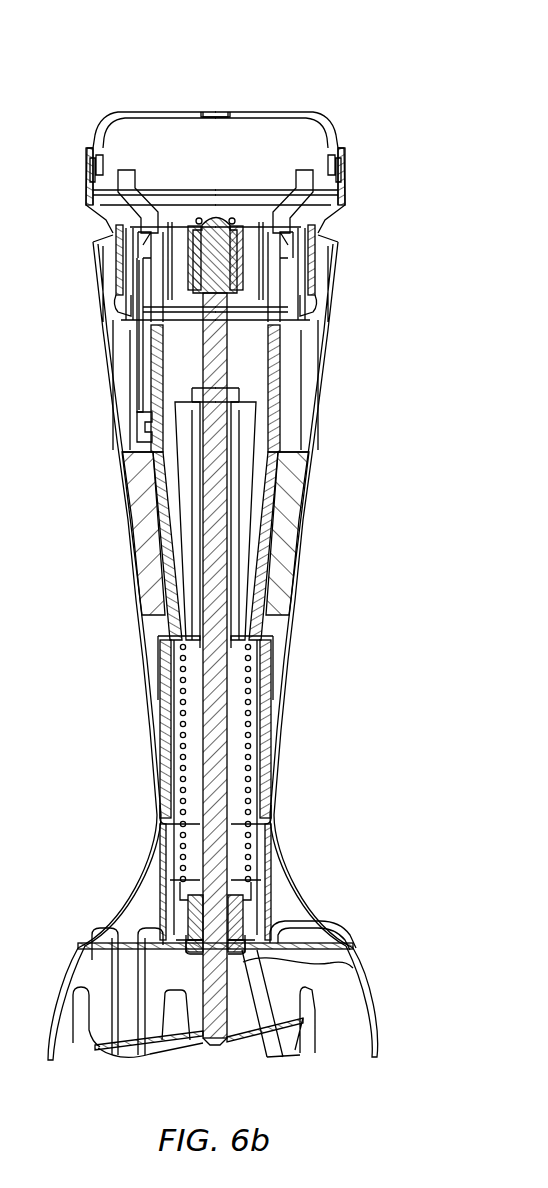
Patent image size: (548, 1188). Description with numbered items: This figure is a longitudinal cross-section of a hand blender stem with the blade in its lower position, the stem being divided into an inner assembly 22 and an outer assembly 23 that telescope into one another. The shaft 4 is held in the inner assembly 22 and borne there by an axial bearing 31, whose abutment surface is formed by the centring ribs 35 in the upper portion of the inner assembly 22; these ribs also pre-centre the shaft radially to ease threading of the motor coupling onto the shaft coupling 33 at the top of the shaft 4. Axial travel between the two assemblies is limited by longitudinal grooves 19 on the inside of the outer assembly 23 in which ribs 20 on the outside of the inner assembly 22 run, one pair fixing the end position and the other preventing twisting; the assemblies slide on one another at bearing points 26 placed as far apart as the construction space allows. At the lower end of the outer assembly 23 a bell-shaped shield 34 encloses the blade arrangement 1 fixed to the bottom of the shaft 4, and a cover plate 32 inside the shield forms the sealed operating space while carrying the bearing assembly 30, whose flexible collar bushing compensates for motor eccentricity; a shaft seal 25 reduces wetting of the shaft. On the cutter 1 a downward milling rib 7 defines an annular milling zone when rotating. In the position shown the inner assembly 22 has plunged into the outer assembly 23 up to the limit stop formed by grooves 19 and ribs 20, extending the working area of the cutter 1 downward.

The blade arrangement (cutter) 1 is at (131, 1055).
The shaft 4 is at (218, 585).
The milling rib 7 is at (196, 1045).
The longitudinal grooves 19 is at (142, 380).
The ribs 20 is at (140, 440).
The inner assembly 22 is at (352, 152).
The outer assembly 23 is at (348, 318).
The shaft seal 25 is at (353, 968).
The bearing points 26 is at (172, 808).
The bearing assembly 30 is at (262, 886).
The axial bearing 31 is at (183, 643).
The cover plate 32 is at (284, 920).
The shaft coupling 33 is at (213, 224).
The bell-shaped shield 34 is at (77, 932).
The centring ribs 35 is at (238, 488).